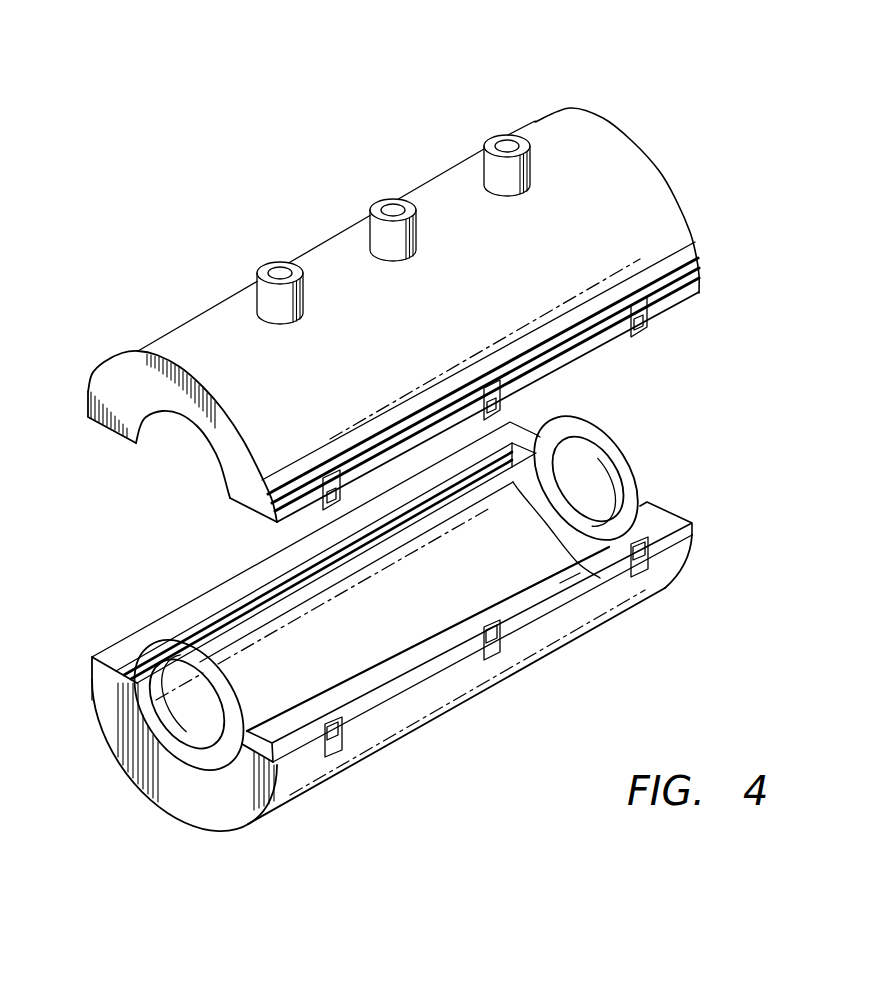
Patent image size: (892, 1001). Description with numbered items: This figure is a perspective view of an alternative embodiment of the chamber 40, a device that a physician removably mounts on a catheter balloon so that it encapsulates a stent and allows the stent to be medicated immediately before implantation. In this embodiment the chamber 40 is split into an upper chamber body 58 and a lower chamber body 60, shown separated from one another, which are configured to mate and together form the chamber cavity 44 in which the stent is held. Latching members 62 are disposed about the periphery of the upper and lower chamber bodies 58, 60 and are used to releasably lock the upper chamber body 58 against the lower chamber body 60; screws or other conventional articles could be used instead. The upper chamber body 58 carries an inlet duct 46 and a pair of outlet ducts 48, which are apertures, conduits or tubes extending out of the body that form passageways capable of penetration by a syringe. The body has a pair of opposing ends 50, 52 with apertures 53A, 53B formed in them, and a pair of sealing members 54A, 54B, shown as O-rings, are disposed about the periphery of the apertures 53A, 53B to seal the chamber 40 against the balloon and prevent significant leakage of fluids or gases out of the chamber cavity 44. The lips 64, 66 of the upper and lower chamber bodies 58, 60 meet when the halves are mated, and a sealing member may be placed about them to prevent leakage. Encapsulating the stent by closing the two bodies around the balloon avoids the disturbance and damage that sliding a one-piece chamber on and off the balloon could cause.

The chamber 40 is at (605, 95).
The chamber cavity 44 is at (290, 690).
The inlet duct 46 is at (393, 210).
The outlet ducts 48 is at (280, 270).
The end 50 is at (187, 798).
The end 52 is at (673, 517).
The aperture 53A is at (138, 729).
The aperture 53B is at (652, 462).
The sealing member 54A is at (180, 743).
The sealing member 54B is at (613, 440).
The upper chamber body 58 is at (632, 197).
The lower chamber body 60 is at (670, 563).
The latching members 62 is at (330, 477).
The lip 64 is at (405, 443).
The lip 66 is at (523, 612).